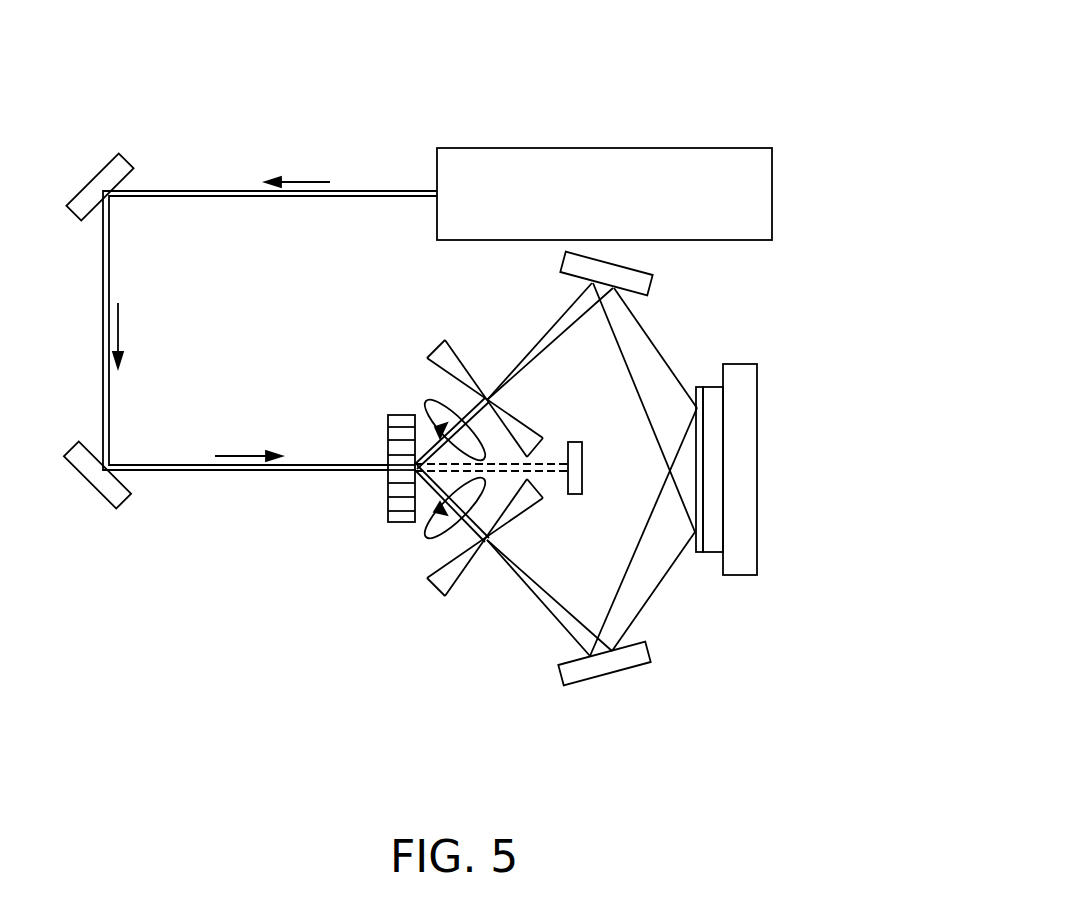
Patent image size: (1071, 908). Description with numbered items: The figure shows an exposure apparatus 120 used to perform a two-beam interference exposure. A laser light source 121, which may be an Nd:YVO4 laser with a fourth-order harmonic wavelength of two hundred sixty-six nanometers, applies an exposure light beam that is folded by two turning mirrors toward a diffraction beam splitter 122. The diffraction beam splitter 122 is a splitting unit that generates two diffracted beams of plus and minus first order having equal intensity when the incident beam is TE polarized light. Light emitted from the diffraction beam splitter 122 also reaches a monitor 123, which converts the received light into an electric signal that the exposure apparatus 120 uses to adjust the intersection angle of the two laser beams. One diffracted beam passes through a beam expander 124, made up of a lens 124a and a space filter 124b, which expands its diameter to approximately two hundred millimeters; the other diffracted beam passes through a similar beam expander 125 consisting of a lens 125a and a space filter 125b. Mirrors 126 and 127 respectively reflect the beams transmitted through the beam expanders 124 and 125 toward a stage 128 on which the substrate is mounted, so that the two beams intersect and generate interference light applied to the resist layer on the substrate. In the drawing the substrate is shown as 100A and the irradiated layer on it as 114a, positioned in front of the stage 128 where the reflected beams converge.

The exposure apparatus 120 is at (656, 112).
The laser light source 121 is at (728, 162).
The diffraction beam splitter 122 is at (397, 445).
The monitor 123 is at (573, 442).
The beam expander 124 is at (331, 330).
The lens 124a is at (432, 402).
The space filter 124b is at (443, 345).
The beam expander 125 is at (331, 532).
The lens 125a is at (432, 535).
The space filter 125b is at (438, 585).
The mirror 126 is at (642, 282).
The mirror 127 is at (640, 653).
The stage 128 is at (745, 447).
The substrate 100A is at (710, 545).
The photoresist layer 114a is at (700, 388).